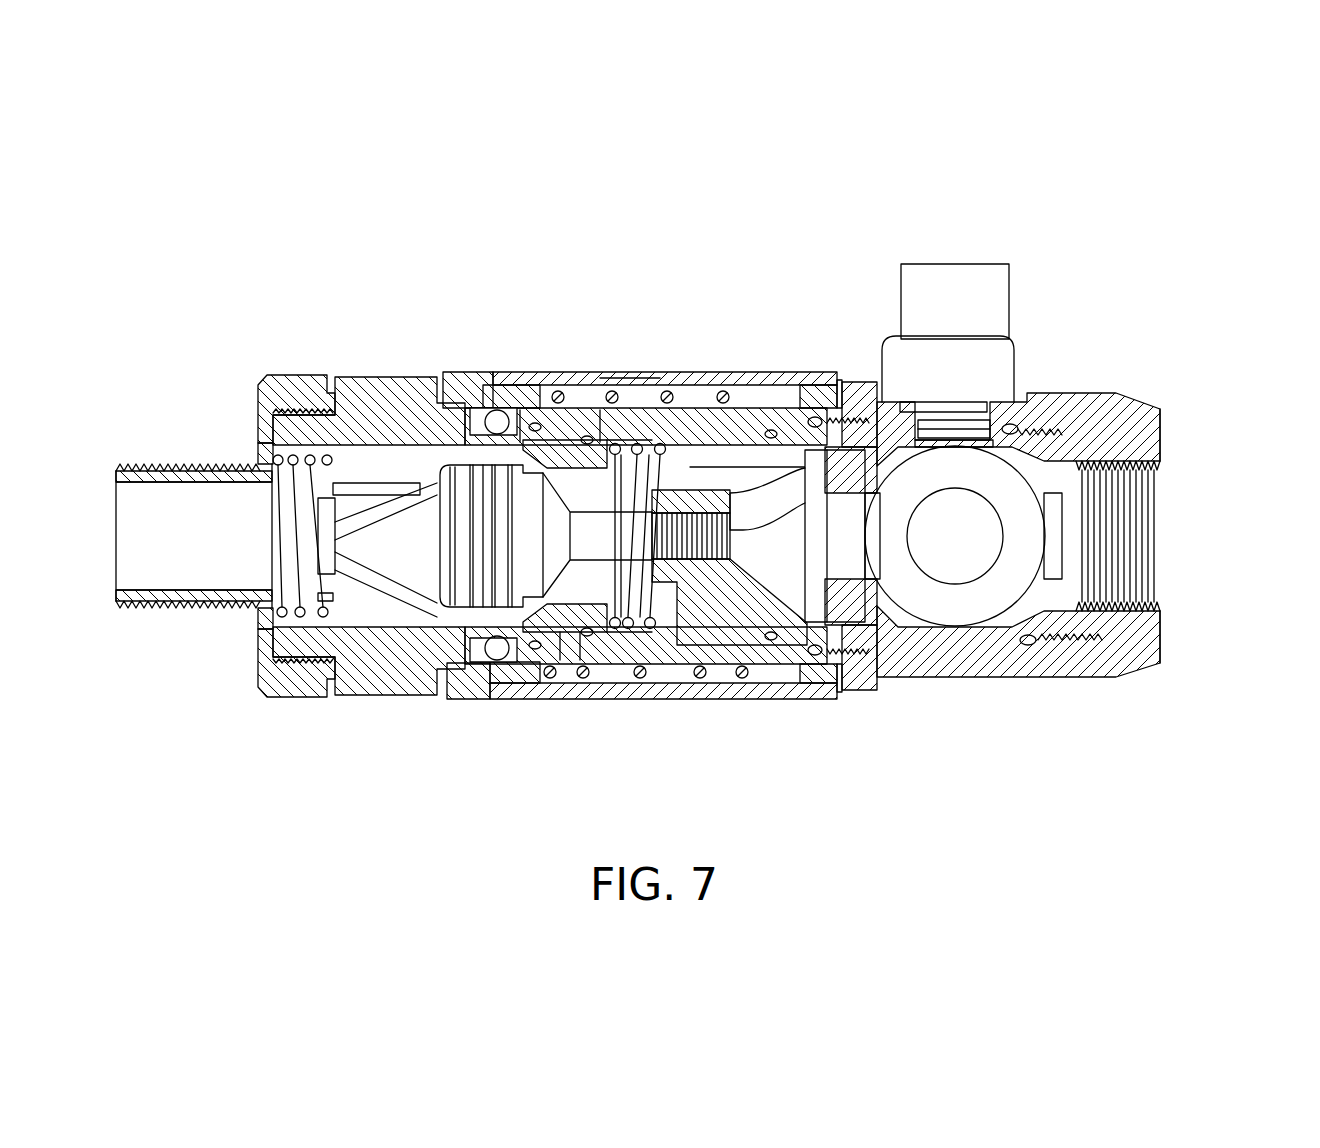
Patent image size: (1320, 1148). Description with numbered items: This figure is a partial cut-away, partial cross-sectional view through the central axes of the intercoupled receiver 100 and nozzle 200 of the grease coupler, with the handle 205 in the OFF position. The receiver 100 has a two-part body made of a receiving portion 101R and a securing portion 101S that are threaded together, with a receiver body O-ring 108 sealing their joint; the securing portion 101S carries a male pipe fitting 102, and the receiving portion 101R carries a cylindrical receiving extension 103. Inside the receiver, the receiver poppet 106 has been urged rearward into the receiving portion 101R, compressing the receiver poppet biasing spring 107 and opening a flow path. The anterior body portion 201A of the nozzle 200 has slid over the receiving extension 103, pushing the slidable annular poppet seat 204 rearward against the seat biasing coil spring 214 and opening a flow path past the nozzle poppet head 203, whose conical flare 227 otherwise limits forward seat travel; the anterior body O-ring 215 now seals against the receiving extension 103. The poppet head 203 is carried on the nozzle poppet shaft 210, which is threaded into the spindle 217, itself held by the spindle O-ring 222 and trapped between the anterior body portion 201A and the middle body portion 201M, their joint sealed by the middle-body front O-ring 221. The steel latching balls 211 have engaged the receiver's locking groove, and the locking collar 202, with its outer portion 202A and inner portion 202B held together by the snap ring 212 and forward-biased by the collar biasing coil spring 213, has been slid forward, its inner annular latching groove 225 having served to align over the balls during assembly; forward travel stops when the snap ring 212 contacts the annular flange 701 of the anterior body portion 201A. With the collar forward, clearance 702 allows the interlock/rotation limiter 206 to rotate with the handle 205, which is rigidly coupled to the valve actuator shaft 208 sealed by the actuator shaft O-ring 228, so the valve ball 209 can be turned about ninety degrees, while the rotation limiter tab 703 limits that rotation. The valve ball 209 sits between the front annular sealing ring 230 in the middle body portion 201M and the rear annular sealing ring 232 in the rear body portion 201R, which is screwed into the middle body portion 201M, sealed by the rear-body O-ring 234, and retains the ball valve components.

The receiver 100 is at (240, 716).
The receiving portion 101R is at (378, 402).
The securing portion 101S is at (297, 375).
The male pipe fitting 102 is at (211, 620).
The cylindrical receiving extension 103 is at (545, 385).
The receiver poppet 106 is at (395, 557).
The receiver poppet biasing spring 107 is at (283, 515).
The receiver body O-ring 108 is at (273, 412).
The nozzle 200 is at (1053, 755).
The anterior body portion 201A is at (568, 650).
The middle body portion 201M is at (1005, 657).
The rear body portion 201R is at (1132, 663).
The locking collar 202 is at (600, 703).
The outer portion 202A is at (608, 385).
The inner portion 202B is at (520, 385).
The nozzle poppet head 203 is at (502, 502).
The slidable annular poppet seat 204 is at (587, 385).
The handle 205 is at (955, 302).
The interlock/rotation limiter 206 is at (962, 377).
The valve actuator shaft 208 is at (919, 404).
The valve ball 209 is at (953, 620).
The nozzle poppet shaft 210 is at (630, 372).
The steel latching balls 211 is at (497, 408).
The circumferential internal snap ring 212 is at (855, 682).
The collar biasing coil spring 213 is at (640, 658).
The seat biasing coil spring 214 is at (632, 540).
The anterior body O-ring 215 is at (532, 385).
The spindle 217 is at (697, 372).
The middle-body front O-ring 221 is at (813, 378).
The spindle O-ring 222 is at (770, 642).
The inner annular latching groove 225 is at (489, 664).
The conical flare 227 is at (473, 510).
The actuator shaft O-ring 228 is at (861, 377).
The front annular sealing ring 230 is at (896, 670).
The rear annular sealing ring 232 is at (998, 650).
The rear-body O-ring 234 is at (1028, 645).
The annular flange 701 is at (790, 600).
The clearance 702 is at (940, 440).
The rotation limiter tab 703 is at (950, 425).